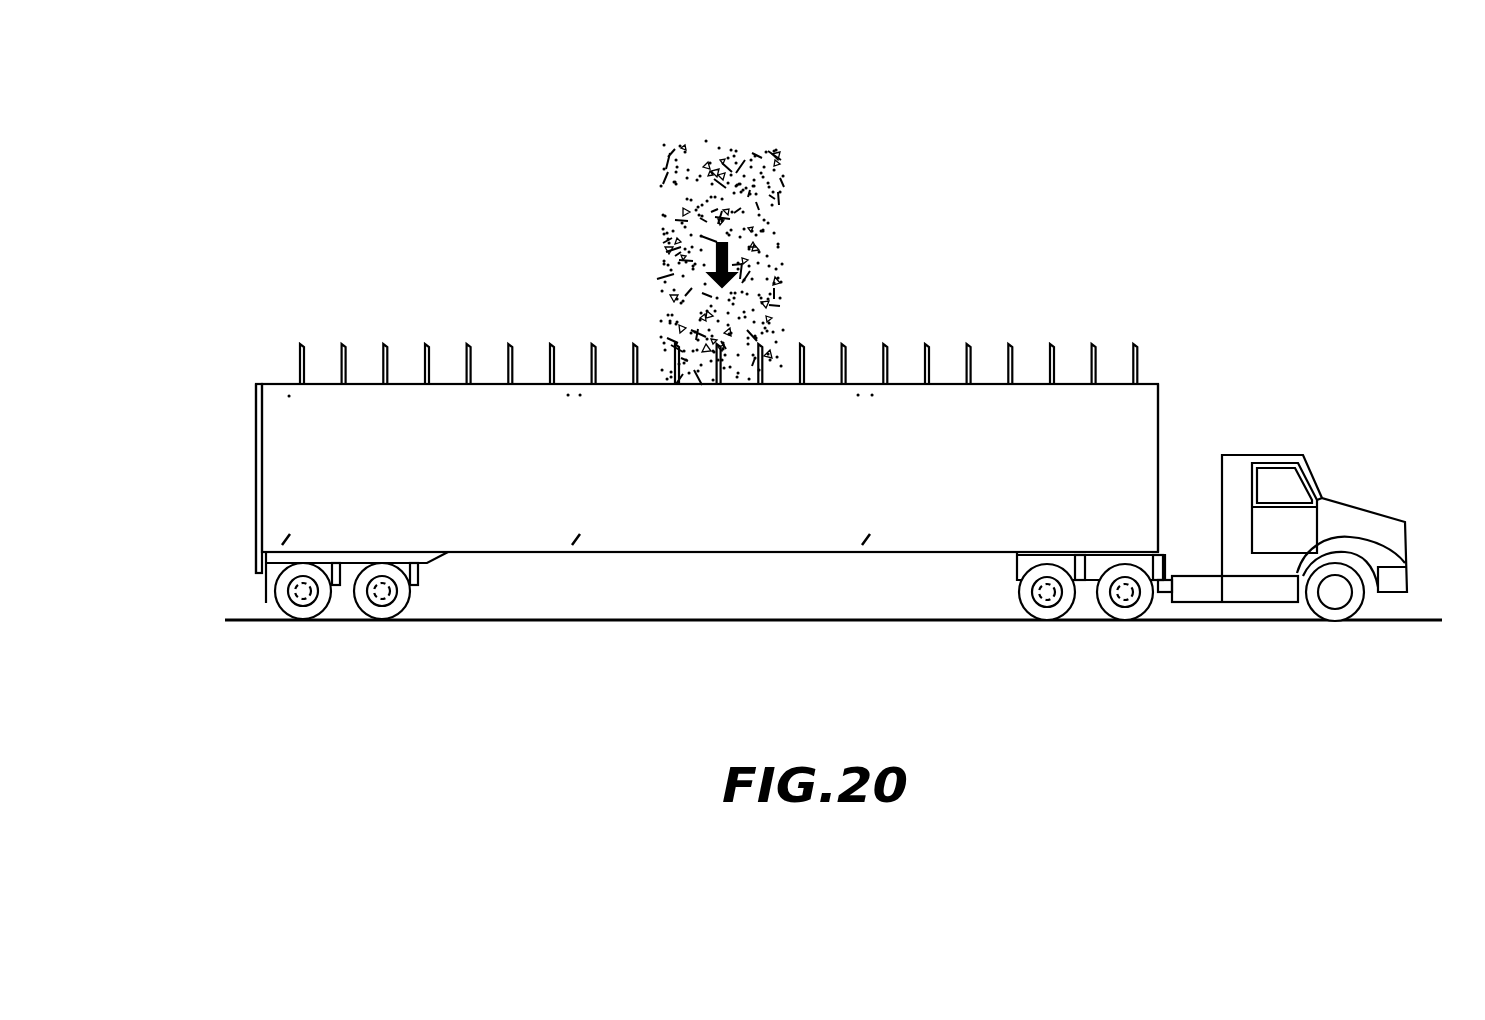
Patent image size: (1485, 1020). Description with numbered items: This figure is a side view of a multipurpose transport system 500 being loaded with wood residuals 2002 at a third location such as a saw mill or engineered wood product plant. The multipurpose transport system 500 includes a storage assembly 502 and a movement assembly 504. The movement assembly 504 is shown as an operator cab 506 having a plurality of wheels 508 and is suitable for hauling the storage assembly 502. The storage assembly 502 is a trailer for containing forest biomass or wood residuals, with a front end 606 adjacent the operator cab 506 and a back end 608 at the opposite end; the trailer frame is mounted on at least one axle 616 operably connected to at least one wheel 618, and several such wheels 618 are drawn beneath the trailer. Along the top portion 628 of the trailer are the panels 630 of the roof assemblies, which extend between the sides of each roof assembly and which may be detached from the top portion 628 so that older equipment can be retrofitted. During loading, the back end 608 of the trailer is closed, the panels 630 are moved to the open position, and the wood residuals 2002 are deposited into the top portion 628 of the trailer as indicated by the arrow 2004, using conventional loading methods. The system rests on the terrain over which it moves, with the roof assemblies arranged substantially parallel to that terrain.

The multipurpose transport system 500 is at (315, 140).
The storage assembly 502 is at (701, 498).
The movement assembly 504 is at (1310, 586).
The operator cab 506 is at (1367, 508).
The wheels 508 is at (1382, 592).
The front end 606 is at (1174, 349).
The back end 608 is at (227, 364).
The axle 616 is at (382, 591).
The wheel 618 is at (303, 591).
The top portion 628 is at (370, 383).
The panels 630 is at (468, 352).
The wood residuals 2002 is at (660, 140).
The arrow 2004 is at (733, 262).